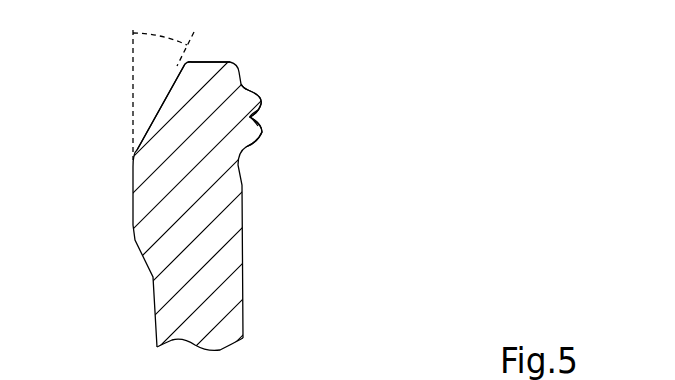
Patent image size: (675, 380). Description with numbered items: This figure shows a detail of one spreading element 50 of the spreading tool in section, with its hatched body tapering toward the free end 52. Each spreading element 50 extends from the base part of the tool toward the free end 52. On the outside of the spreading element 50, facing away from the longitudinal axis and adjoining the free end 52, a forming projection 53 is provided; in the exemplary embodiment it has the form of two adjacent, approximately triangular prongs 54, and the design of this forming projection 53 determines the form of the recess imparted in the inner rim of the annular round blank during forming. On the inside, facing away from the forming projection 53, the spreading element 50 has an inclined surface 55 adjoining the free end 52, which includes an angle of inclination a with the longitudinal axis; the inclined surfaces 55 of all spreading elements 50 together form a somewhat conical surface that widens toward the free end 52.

The spreading element 50 is at (153, 222).
The free end 52 is at (220, 60).
The forming projection 53 is at (273, 118).
The triangular prong 54 is at (257, 90).
The inclined surface 55 is at (155, 108).
The angle of inclination a is at (147, 68).